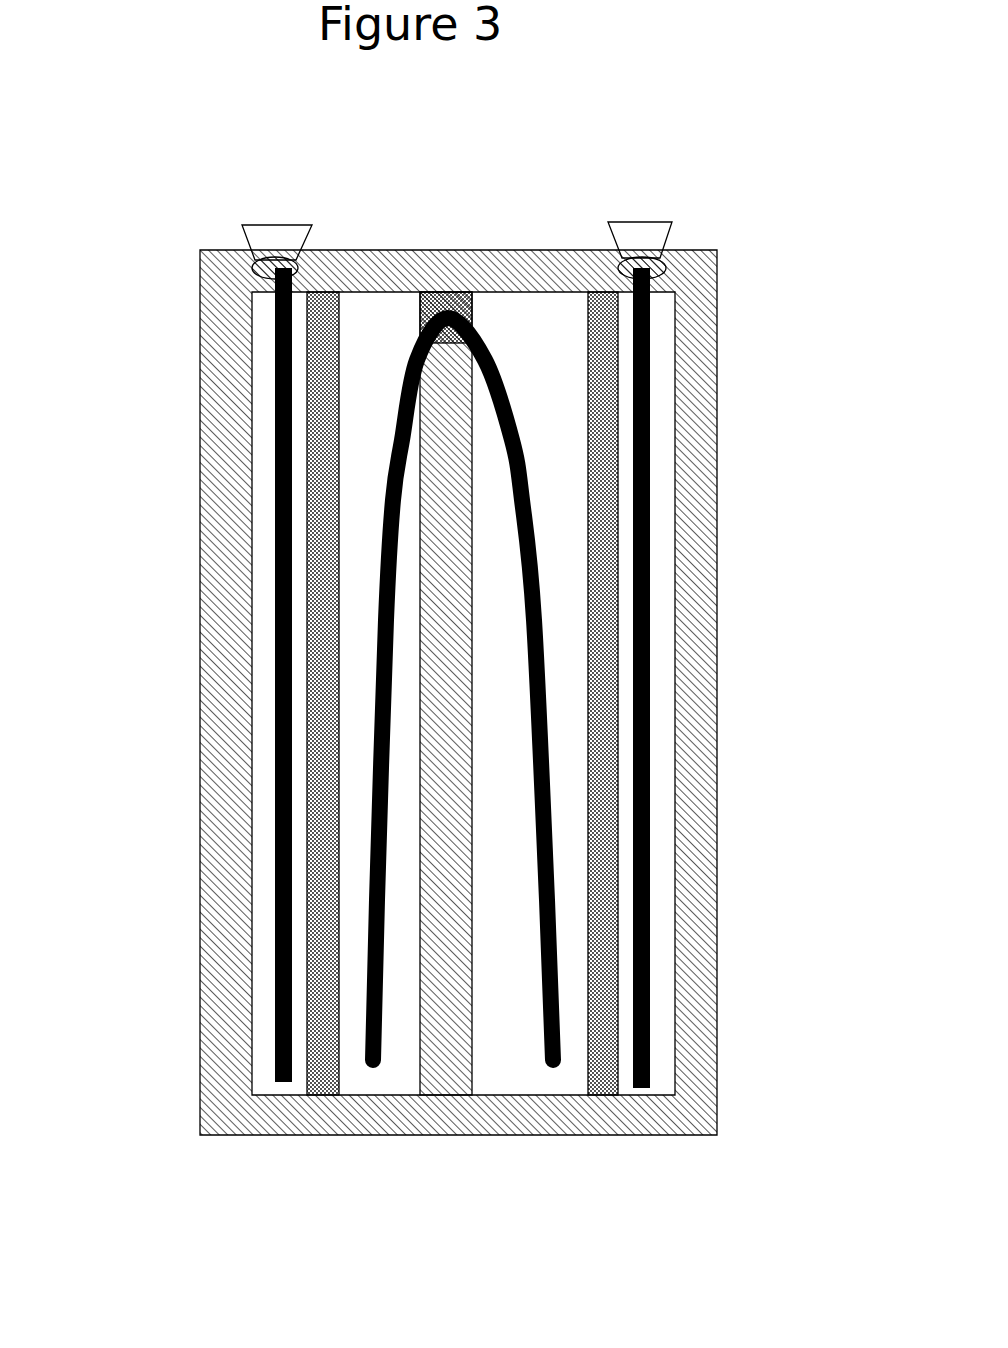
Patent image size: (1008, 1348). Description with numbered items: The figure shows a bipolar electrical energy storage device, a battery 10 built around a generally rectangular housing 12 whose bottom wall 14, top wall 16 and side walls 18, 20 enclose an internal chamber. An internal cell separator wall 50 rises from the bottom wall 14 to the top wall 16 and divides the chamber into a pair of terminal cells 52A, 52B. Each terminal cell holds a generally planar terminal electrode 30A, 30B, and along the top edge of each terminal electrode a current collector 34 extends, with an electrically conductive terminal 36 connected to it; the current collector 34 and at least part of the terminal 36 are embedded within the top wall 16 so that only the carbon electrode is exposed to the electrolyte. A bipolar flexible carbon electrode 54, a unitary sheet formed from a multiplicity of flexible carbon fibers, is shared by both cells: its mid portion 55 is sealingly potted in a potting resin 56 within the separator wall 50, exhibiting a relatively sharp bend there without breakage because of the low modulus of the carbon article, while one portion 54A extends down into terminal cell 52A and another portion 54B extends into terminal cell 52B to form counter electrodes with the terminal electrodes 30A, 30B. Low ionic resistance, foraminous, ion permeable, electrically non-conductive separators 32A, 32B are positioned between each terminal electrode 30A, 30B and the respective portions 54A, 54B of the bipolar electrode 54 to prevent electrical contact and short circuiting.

The battery 10 is at (570, 100).
The housing 12 is at (459, 715).
The bottom wall 14 is at (292, 1118).
The top wall 16 is at (540, 268).
The side wall 18 is at (218, 490).
The side wall 20 is at (693, 880).
The terminal electrode 30A is at (277, 557).
The terminal electrode 30B is at (650, 557).
The separator 32A is at (322, 738).
The separator 32B is at (608, 733).
The current collector 34 is at (267, 268).
The terminal 36 is at (285, 239).
The cell separator wall 50 is at (440, 1072).
The terminal cell 52A is at (297, 1072).
The terminal cell 52B is at (665, 1070).
The bipolar flexible carbon electrode 54 is at (550, 495).
The portion of bipolar electrode 54A is at (367, 1065).
The portion of bipolar electrode 54B is at (556, 1062).
The mid portion 55 is at (418, 328).
The potting resin 56 is at (455, 300).